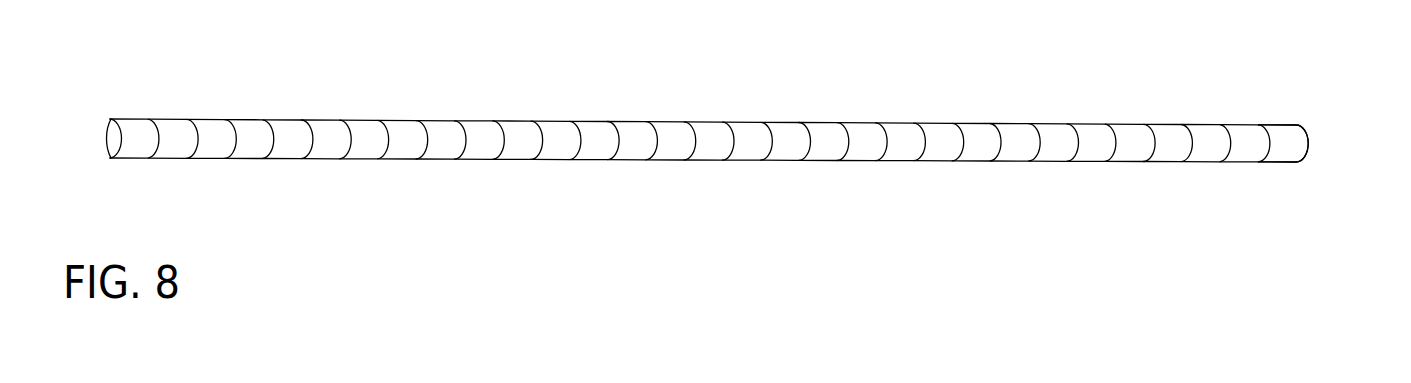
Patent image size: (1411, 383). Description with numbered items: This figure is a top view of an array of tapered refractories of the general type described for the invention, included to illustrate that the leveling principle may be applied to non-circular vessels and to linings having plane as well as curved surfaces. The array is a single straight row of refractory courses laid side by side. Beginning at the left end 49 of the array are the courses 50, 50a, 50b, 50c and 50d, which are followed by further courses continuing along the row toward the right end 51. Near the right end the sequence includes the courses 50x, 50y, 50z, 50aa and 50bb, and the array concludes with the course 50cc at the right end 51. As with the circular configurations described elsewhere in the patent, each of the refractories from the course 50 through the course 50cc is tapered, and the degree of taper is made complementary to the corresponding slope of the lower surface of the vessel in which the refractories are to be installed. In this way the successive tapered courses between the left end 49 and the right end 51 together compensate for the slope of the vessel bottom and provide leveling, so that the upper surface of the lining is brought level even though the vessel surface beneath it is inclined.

The left end 49 is at (102, 129).
The course 50 is at (131, 148).
The course 50a is at (185, 150).
The course 50b is at (223, 150).
The course 50c is at (253, 150).
The course 50d is at (290, 148).
The course 50x is at (1100, 155).
The course 50y is at (1125, 155).
The course 50z is at (1167, 157).
The course 50aa is at (1208, 132).
The course 50bb is at (1243, 132).
The course 50cc is at (1278, 132).
The right end 51 is at (1316, 159).